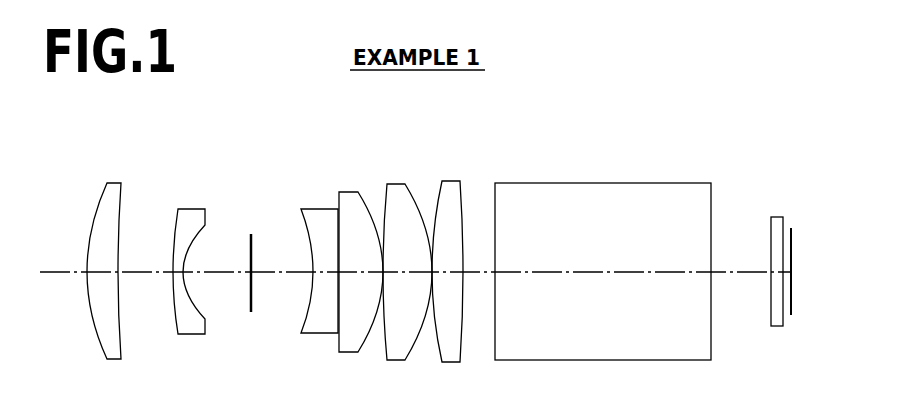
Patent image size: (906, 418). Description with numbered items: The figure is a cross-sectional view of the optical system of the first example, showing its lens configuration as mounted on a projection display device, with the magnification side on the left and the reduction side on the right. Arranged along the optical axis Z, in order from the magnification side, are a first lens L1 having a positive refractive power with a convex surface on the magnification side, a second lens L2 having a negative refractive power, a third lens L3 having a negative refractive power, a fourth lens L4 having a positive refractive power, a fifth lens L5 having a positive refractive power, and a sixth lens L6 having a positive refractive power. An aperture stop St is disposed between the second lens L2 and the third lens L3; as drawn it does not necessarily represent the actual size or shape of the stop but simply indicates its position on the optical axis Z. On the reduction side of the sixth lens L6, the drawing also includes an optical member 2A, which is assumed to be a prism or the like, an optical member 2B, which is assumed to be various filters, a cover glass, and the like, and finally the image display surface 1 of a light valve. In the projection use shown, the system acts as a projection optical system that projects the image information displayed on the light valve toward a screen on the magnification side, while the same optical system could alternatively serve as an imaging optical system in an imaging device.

The optical axis Z is at (57, 271).
The first lens L1 is at (112, 182).
The second lens L2 is at (193, 212).
The aperture stop St is at (252, 236).
The third lens L3 is at (315, 213).
The fourth lens L4 is at (347, 192).
The fifth lens L5 is at (396, 185).
The sixth lens L6 is at (451, 183).
The optical member 2A is at (598, 352).
The optical member 2B is at (780, 328).
The image display surface 1 is at (792, 232).